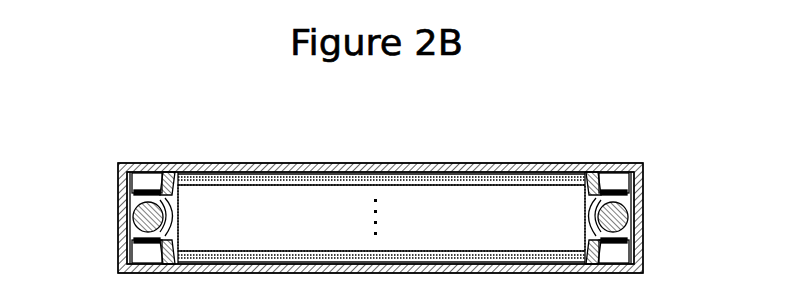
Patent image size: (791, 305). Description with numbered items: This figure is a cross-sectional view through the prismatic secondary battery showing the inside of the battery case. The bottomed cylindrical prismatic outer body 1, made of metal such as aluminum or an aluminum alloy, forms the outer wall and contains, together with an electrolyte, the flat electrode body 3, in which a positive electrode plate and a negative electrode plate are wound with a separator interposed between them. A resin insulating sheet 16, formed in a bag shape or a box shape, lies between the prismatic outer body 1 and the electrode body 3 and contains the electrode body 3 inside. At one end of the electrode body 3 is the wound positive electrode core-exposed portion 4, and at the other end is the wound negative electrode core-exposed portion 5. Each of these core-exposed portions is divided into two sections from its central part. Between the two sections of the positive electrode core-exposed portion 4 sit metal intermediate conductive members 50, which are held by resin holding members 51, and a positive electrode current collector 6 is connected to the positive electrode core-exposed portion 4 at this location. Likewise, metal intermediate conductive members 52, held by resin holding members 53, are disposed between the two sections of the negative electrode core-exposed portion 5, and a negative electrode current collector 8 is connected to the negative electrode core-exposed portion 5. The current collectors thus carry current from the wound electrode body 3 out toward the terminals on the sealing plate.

The prismatic outer body 1 is at (288, 165).
The electrode body 3 is at (503, 196).
The positive electrode core-exposed portion 4 is at (581, 190).
The negative electrode core-exposed portion 5 is at (198, 183).
The positive electrode current collector 6 is at (644, 172).
The negative electrode current collector 8 is at (118, 172).
The insulating sheet 16 is at (330, 171).
The intermediate conductive member 50 is at (644, 200).
The holding member 51 is at (640, 211).
The intermediate conductive member 52 is at (121, 203).
The holding member 53 is at (121, 222).